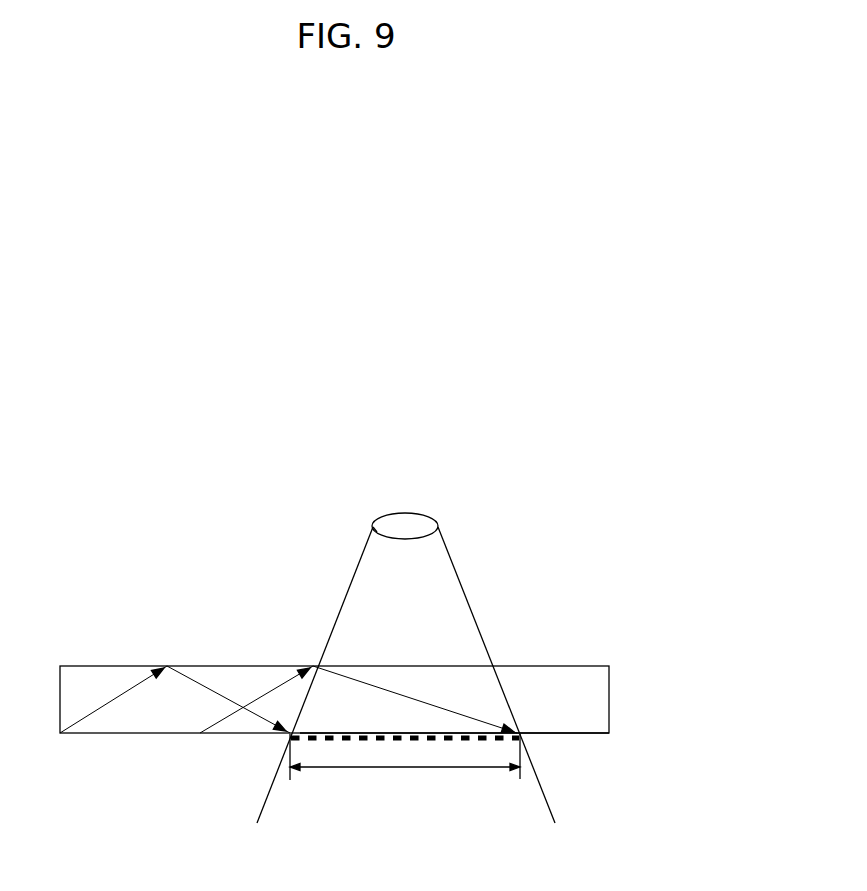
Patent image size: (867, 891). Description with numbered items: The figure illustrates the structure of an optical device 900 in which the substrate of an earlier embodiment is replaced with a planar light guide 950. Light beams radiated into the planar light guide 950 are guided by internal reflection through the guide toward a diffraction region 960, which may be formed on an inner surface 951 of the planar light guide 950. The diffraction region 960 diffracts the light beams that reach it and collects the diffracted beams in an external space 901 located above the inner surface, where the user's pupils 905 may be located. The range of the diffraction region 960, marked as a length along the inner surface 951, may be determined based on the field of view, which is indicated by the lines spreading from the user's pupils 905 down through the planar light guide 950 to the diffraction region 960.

The optical device 900 is at (542, 542).
The external space 901 is at (405, 540).
The user's pupils 905 is at (417, 522).
The planar light guide 950 is at (105, 680).
The inner surface 951 is at (573, 734).
The diffraction region 960 is at (301, 741).